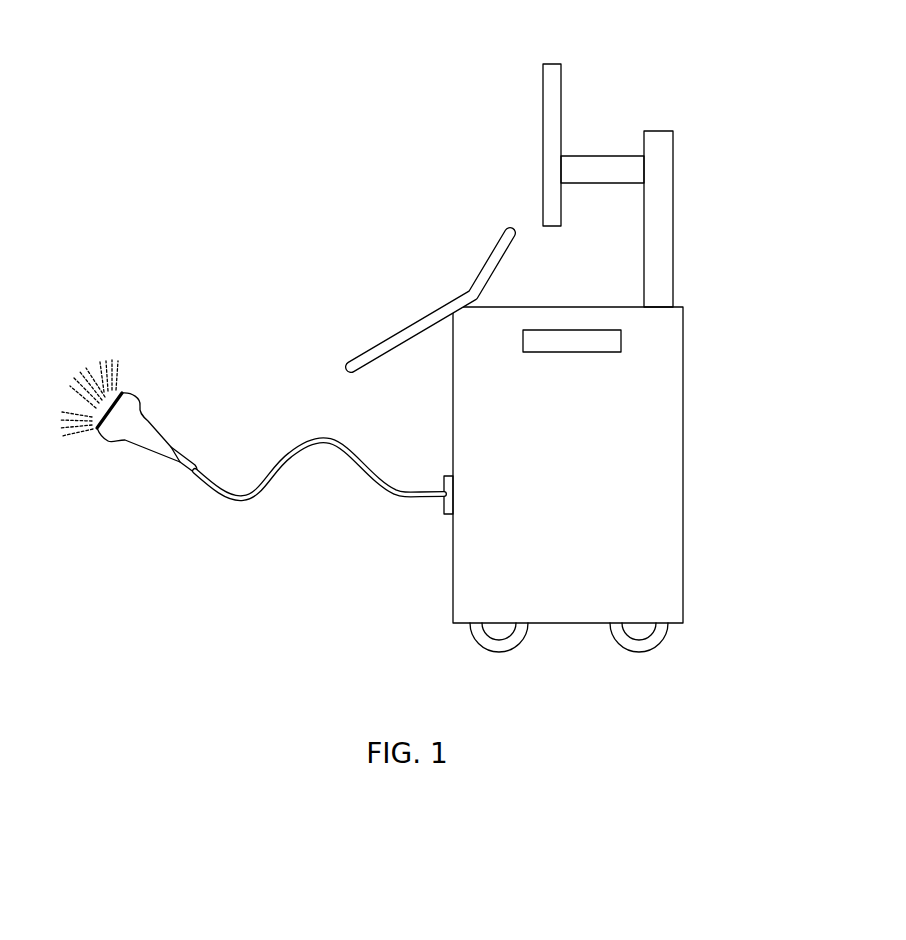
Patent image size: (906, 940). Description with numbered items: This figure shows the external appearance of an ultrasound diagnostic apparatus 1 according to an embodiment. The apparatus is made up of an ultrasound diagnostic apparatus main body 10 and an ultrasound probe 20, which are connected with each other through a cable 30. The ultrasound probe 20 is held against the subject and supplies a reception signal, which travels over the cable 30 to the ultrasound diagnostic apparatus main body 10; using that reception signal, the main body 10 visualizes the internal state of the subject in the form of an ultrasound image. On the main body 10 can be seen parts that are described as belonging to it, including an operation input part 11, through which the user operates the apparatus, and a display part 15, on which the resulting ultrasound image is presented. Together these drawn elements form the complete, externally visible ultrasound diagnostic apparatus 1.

The ultrasound diagnostic apparatus 1 is at (717, 149).
The ultrasound diagnostic apparatus main body 10 is at (684, 466).
The operation input part 11 is at (497, 247).
The display part 15 is at (543, 93).
The ultrasound probe 20 is at (170, 432).
The cable 30 is at (325, 437).